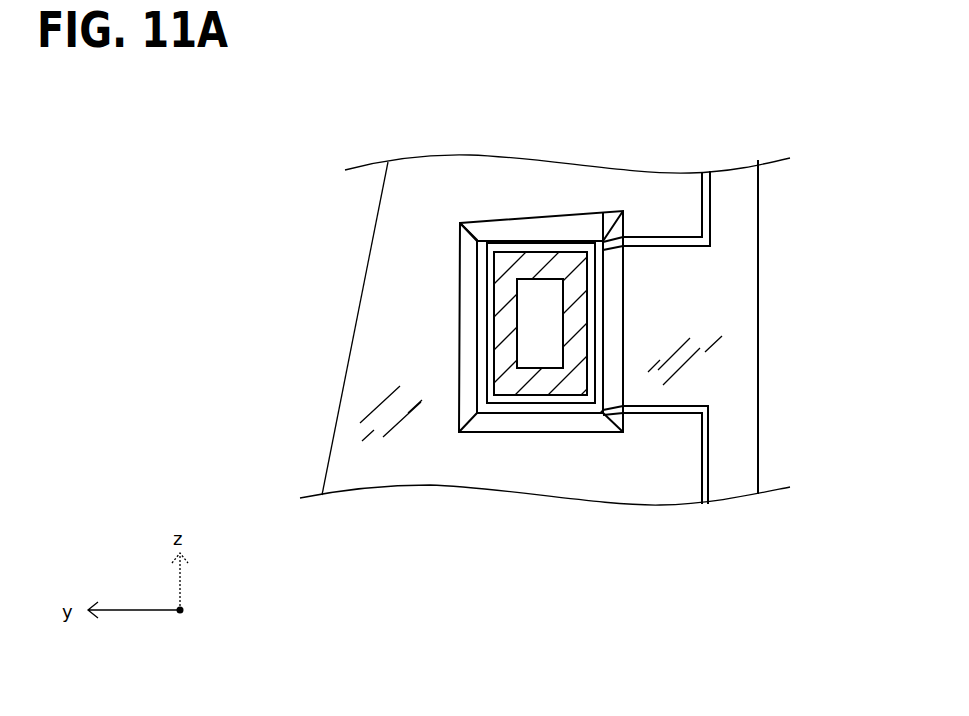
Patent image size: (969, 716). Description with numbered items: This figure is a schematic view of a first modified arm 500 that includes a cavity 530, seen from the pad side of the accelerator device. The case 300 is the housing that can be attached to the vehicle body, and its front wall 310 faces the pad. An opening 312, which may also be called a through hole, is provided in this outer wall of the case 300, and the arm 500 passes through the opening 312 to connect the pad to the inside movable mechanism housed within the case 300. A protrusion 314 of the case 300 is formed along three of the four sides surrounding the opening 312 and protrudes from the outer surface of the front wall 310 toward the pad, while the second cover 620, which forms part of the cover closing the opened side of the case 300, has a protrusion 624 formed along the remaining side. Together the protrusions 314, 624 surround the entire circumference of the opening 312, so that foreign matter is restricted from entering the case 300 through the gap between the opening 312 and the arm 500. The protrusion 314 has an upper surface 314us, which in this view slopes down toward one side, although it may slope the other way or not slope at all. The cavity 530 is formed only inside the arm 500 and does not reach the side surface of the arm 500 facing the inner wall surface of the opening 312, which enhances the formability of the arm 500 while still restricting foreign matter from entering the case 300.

The case 300 is at (272, 195).
The front wall 310 is at (355, 475).
The opening 312 is at (583, 455).
The protrusion 314 is at (468, 285).
The upper surface 314us is at (487, 222).
The arm 500 is at (577, 287).
The protrusion 624 is at (600, 313).
The cavity 530 is at (545, 350).
The second cover 620 is at (735, 457).